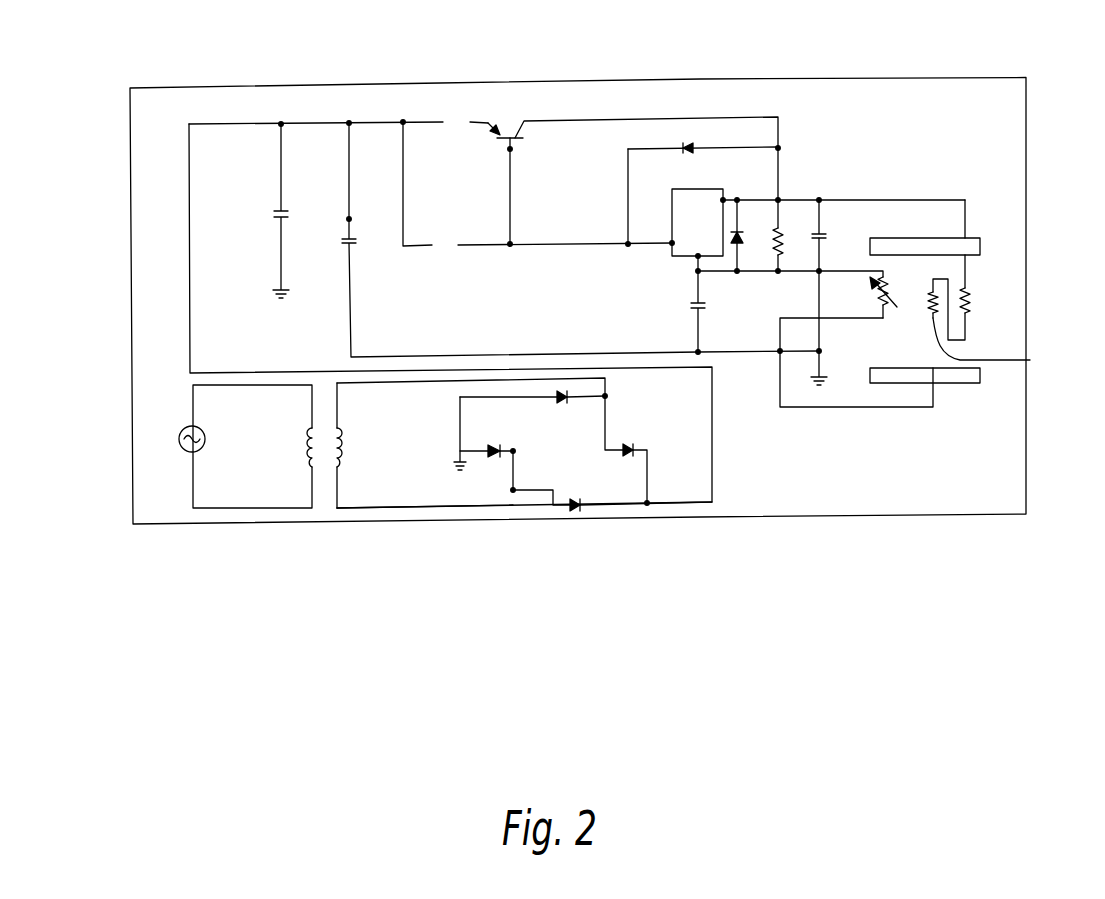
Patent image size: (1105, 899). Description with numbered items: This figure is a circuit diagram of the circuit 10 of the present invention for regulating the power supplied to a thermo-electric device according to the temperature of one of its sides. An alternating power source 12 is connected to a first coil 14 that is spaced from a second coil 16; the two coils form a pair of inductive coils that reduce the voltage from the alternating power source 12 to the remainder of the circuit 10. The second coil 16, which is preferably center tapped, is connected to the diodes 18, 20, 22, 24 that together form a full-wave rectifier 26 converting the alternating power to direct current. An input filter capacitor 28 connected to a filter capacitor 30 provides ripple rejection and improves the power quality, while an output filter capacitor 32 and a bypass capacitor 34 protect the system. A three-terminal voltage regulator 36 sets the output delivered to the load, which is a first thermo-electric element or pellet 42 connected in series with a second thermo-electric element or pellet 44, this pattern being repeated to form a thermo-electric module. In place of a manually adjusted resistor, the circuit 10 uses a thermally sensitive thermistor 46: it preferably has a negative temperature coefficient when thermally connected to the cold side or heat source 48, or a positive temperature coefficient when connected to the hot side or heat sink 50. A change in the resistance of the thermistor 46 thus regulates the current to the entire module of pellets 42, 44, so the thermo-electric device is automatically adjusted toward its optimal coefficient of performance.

The circuit 10 is at (388, 580).
The alternating power source 12 is at (201, 449).
The first coil 14 is at (312, 462).
The second coil 16 is at (358, 466).
The diode 18 is at (494, 462).
The diode 20 is at (577, 512).
The diode 22 is at (572, 383).
The diode 24 is at (640, 457).
The full-wave rectifier 26 is at (578, 625).
The input filter capacitor 28 is at (272, 222).
The filter capacitor 30 is at (345, 228).
The output filter capacitor 32 is at (820, 229).
The bypass capacitor 34 is at (703, 313).
The three-terminal voltage regulator 36 is at (720, 198).
The first thermo-electric element or pellet 42 is at (967, 329).
The second thermo-electric element or pellet 44 is at (1030, 360).
The thermistor 46 is at (887, 305).
The cold side or heat source 48 is at (921, 316).
The hot side or heat sink 50 is at (970, 268).